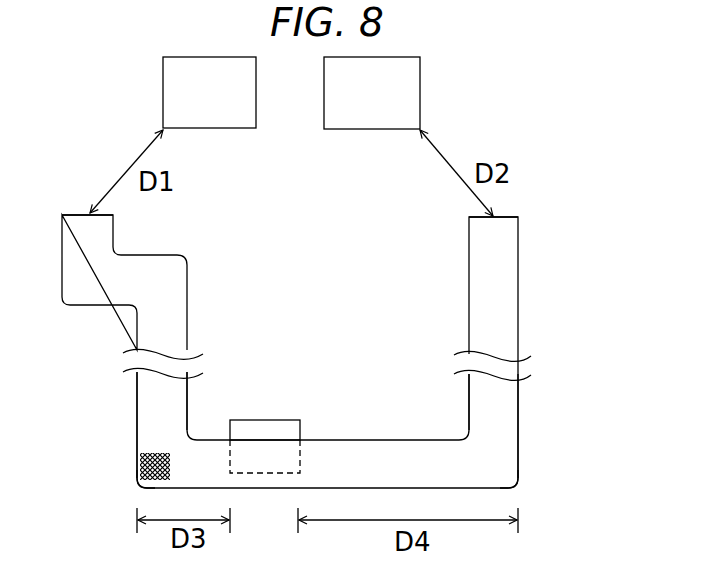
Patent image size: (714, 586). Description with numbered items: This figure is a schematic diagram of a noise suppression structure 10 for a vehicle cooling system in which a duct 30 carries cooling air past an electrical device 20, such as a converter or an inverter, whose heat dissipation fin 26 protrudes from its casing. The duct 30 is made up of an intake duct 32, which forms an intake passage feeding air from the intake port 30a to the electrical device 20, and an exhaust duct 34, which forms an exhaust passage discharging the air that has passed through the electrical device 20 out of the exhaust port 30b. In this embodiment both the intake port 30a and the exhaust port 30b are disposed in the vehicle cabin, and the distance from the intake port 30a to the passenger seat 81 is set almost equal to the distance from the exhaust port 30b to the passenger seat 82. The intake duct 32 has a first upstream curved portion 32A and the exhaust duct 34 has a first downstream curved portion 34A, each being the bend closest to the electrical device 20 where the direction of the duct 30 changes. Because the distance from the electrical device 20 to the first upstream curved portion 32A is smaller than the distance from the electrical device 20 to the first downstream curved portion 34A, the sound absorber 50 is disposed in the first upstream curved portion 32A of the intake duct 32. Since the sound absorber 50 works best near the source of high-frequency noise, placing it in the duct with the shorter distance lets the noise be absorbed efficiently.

The noise suppression structure 10 is at (471, 136).
The electrical device 20 is at (270, 420).
The heat dissipation fin 26 is at (263, 474).
The duct 30 is at (379, 437).
The intake port 30a is at (73, 213).
The exhaust port 30b is at (506, 216).
The intake duct 32 is at (135, 397).
The first upstream curved portion 32A is at (135, 488).
The exhaust duct 34 is at (520, 414).
The first downstream curved portion 34A is at (522, 486).
The sound absorber 50 is at (132, 466).
The passenger seat 81 is at (218, 130).
The passenger seat 82 is at (372, 131).